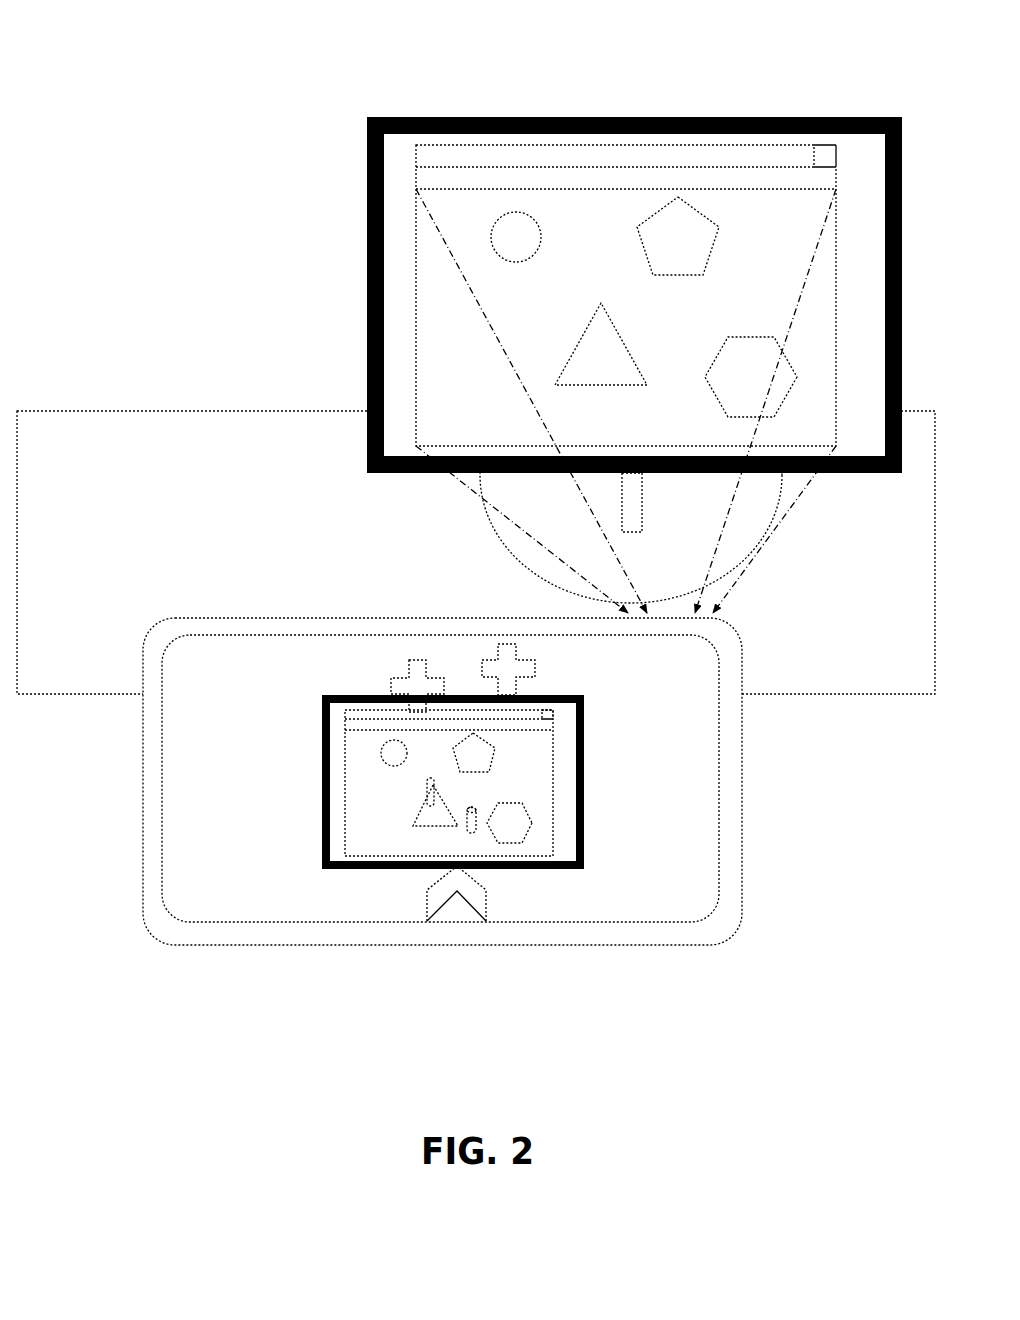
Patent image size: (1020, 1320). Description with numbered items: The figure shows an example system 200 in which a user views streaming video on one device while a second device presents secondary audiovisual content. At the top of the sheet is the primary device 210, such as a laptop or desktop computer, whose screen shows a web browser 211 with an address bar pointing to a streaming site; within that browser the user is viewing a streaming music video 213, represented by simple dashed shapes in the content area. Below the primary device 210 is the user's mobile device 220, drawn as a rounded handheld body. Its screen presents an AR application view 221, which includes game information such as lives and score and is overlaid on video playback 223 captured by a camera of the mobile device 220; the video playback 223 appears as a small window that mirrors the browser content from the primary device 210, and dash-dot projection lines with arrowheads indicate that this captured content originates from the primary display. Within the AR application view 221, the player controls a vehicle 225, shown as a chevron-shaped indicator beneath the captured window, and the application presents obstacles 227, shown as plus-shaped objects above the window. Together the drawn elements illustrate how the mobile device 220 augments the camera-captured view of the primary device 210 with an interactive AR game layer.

The system 200 is at (128, 103).
The primary device 210 is at (367, 147).
The web browser 211 is at (450, 167).
The streaming music video 213 is at (555, 305).
The mobile device 220 is at (163, 619).
The AR application view 221 is at (192, 807).
The video playback 223 is at (350, 693).
The vehicle 225 is at (427, 906).
The obstacles 227 is at (533, 667).